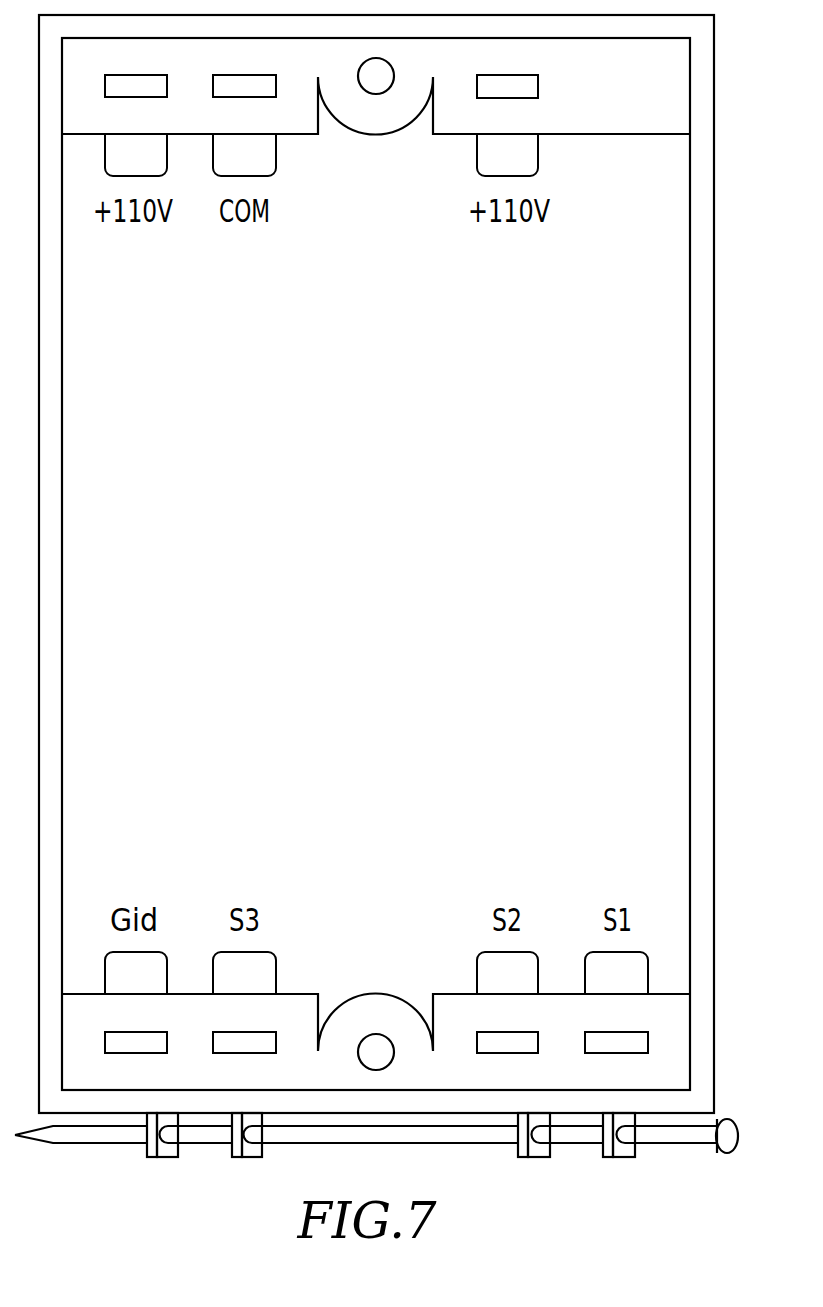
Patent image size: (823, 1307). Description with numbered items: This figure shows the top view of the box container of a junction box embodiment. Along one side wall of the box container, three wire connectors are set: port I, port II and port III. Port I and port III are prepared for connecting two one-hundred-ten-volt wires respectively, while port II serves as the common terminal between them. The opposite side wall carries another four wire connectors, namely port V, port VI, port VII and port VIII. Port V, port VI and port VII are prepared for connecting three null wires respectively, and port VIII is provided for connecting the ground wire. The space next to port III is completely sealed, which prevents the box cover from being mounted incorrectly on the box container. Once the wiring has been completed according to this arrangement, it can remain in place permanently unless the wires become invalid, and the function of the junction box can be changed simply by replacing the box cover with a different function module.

The port I is at (136, 108).
The port II is at (244, 108).
The port III is at (507, 108).
The port V is at (616, 1021).
The port VI is at (507, 1021).
The port VII is at (244, 1021).
The port VIII is at (135, 1021).